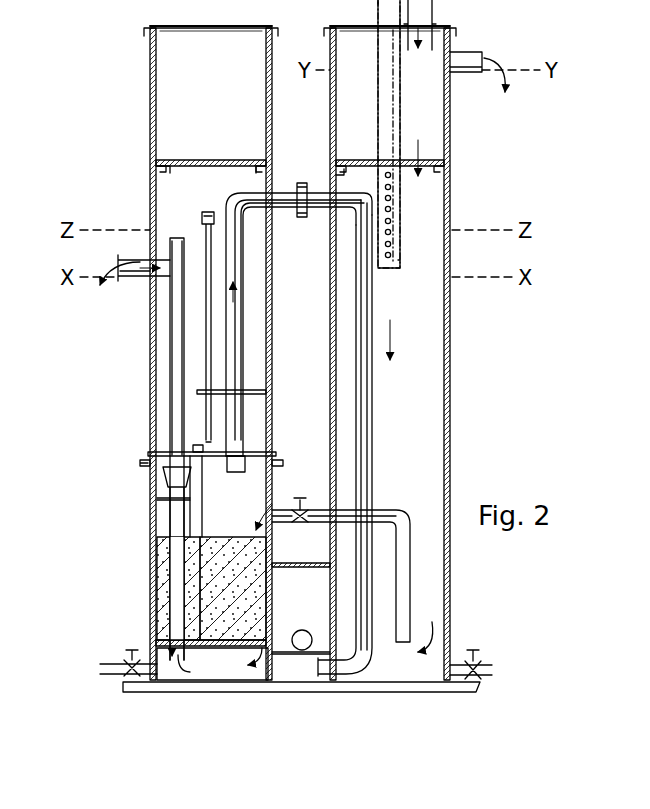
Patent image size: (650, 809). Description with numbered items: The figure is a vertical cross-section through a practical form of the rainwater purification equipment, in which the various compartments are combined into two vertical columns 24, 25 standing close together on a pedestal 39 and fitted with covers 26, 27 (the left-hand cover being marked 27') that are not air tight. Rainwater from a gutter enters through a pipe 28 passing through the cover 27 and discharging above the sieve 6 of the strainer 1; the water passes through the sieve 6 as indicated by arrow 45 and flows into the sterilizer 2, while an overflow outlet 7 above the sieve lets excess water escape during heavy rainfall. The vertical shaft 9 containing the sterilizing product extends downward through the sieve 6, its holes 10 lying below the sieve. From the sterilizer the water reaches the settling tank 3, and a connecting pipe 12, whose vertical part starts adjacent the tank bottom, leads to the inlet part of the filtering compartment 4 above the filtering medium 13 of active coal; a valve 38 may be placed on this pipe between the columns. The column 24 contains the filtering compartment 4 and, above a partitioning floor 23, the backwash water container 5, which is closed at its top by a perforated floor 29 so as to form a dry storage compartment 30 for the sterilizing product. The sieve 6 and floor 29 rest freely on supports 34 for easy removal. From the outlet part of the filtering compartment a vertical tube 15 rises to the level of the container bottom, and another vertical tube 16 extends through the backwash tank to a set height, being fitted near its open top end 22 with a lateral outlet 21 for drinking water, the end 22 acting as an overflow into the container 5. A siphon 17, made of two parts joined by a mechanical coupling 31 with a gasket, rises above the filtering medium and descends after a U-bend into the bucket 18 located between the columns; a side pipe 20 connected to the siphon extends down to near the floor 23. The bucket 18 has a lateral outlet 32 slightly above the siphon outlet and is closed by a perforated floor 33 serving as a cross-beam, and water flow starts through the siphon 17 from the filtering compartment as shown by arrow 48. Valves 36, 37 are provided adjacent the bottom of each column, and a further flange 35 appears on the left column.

The strainer 1 is at (450, 308).
The sterilizer 2 is at (427, 242).
The settling tank 3 is at (430, 548).
The filtering compartment 4 is at (160, 520).
The backwash water container 5 is at (205, 370).
The sieve 6 is at (345, 162).
The overflow outlet 7 is at (468, 62).
The vertical shaft 9 is at (400, 124).
The holes 10 is at (393, 218).
The connecting pipe 12 is at (290, 510).
The filtering medium 13 is at (160, 550).
The vertical tube 15 is at (200, 518).
The vertical tube 16 is at (178, 605).
The siphon 17 is at (373, 440).
The bucket 18 is at (305, 679).
The side pipe 20 is at (236, 193).
The outlet 21 is at (148, 266).
The top end 22 is at (176, 238).
The partitioning floor 23 is at (195, 452).
The vertical column 24 is at (150, 88).
The vertical column 25 is at (448, 438).
The cover 26 is at (214, 661).
The cover 27 is at (365, 17).
The cover 27' is at (185, 17).
The pipe 28 is at (436, 20).
The perforated floor 29 is at (178, 163).
The storage compartment 30 is at (222, 84).
The mechanical coupling 31 is at (302, 217).
The lateral outlet 32 is at (302, 630).
The perforated floor 33 is at (290, 568).
The supports 34 is at (163, 171).
The flange 35 is at (148, 465).
The valve 36 is at (124, 666).
The valve 37 is at (481, 660).
The valve 38 is at (304, 512).
The pedestal 39 is at (480, 686).
The arrow 45 is at (406, 20).
The arrow 48 is at (238, 328).